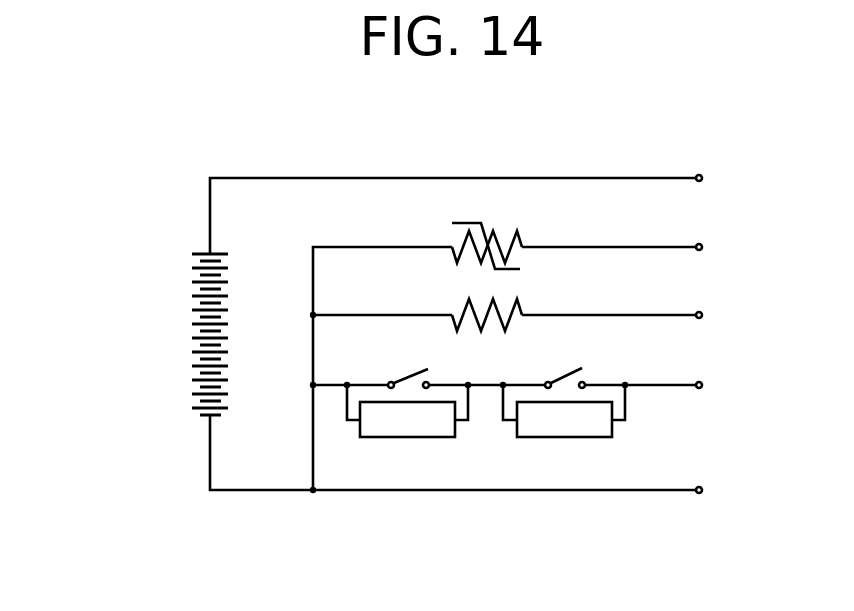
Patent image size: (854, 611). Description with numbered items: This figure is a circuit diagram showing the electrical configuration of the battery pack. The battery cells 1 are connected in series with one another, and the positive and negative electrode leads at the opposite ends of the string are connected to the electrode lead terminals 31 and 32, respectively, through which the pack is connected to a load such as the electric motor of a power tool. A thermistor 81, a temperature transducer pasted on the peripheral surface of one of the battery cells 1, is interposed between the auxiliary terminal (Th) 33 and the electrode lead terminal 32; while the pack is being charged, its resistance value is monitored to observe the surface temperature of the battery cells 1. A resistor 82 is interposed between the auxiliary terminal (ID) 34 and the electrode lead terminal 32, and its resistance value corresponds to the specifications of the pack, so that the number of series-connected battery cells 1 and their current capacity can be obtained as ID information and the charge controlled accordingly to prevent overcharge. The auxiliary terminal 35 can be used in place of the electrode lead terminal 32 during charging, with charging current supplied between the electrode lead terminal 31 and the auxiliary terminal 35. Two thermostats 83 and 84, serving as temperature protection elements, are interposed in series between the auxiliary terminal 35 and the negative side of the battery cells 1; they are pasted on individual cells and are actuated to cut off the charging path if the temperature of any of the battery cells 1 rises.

The battery cells 1 is at (192, 286).
The thermistor 81 is at (520, 242).
The resistor 82 is at (520, 311).
The thermostat 83 is at (433, 377).
The thermostat 84 is at (587, 375).
The electrode lead terminal 31 is at (701, 175).
The electrode lead terminal 32 is at (701, 487).
The auxiliary terminal (Th) 33 is at (701, 244).
The auxiliary terminal (ID) 34 is at (701, 312).
The auxiliary terminal 35 is at (701, 382).